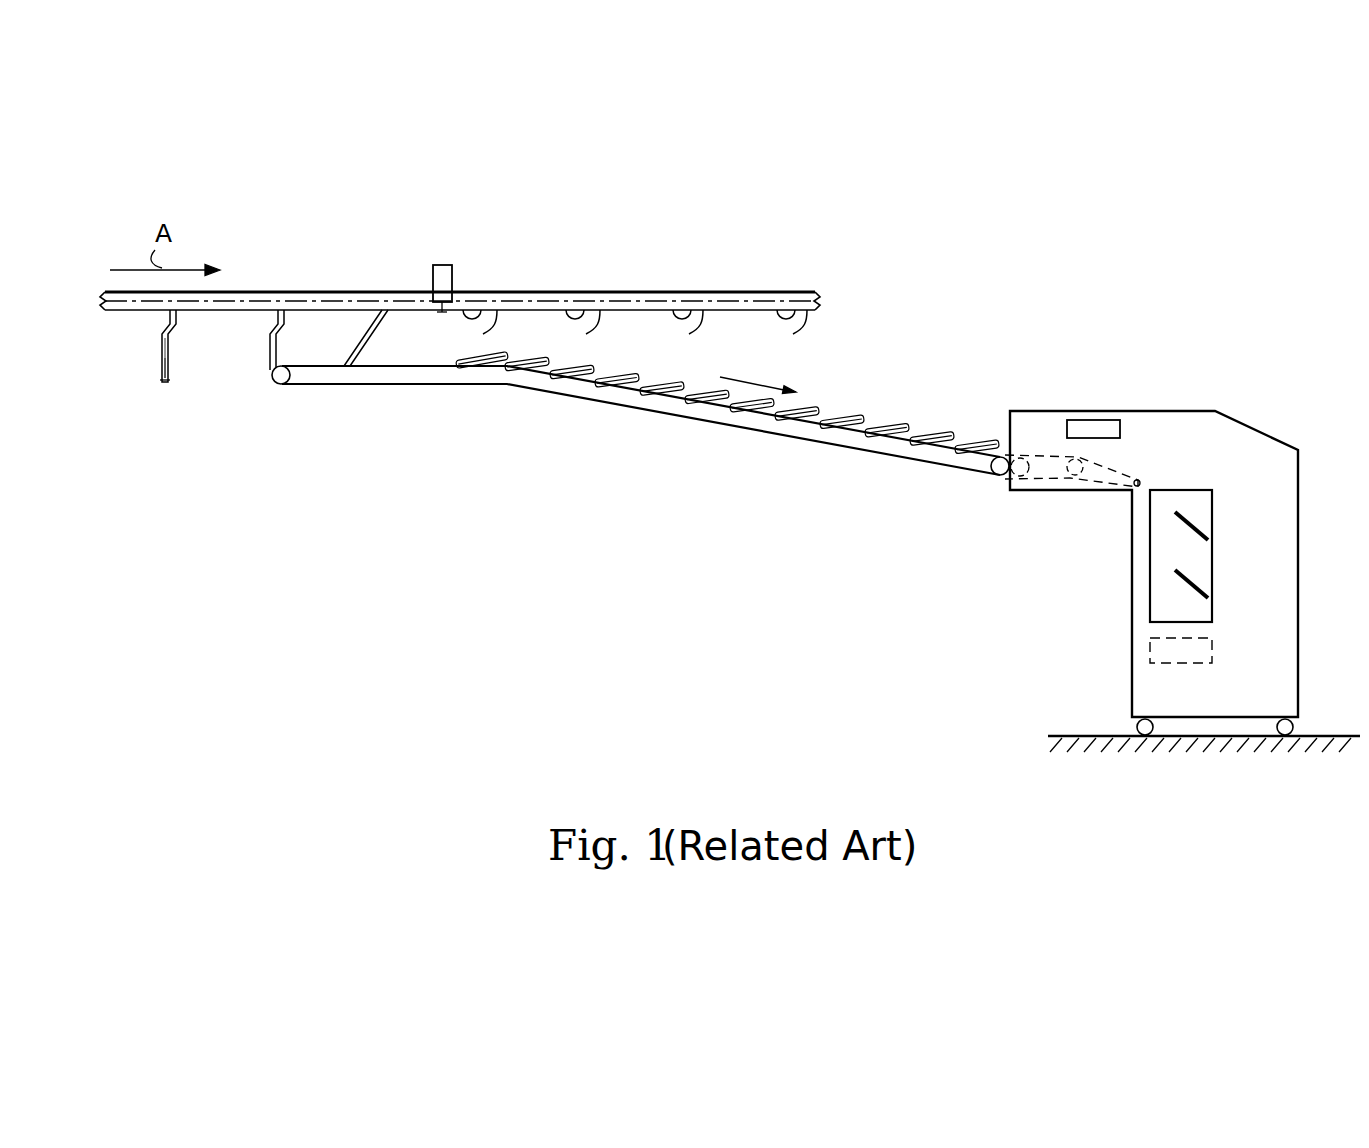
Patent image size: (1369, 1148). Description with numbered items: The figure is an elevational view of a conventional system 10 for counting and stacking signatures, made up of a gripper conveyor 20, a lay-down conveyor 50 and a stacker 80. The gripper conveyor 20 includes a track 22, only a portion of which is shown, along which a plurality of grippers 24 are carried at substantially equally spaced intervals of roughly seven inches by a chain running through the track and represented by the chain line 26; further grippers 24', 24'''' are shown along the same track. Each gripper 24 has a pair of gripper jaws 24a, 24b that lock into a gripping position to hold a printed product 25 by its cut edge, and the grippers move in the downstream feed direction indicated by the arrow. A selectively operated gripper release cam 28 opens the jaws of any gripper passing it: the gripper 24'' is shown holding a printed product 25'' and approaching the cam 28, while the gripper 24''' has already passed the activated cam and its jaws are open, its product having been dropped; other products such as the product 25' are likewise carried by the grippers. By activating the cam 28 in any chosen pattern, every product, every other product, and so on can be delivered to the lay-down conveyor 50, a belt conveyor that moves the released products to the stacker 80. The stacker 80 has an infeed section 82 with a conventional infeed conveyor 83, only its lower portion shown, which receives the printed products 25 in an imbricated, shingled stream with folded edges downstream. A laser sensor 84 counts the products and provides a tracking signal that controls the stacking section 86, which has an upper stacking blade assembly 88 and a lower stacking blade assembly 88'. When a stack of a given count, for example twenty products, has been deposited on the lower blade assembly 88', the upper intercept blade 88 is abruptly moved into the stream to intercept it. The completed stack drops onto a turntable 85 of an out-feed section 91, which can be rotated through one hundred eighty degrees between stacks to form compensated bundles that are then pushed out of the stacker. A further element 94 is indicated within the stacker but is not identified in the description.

The system 10 is at (533, 134).
The gripper conveyor 20 is at (460, 243).
The track 22 is at (660, 292).
The gripper 24 is at (164, 349).
The gripper jaw 24a is at (164, 333).
The gripper jaw 24b is at (178, 320).
The hanger 24' is at (313, 340).
The gripper 24'' is at (446, 332).
The gripper 24''' is at (558, 335).
The hanger hook 24'''' is at (706, 339).
The printed product 25 is at (557, 401).
The article roller 25' is at (247, 406).
The printed product 25'' is at (340, 378).
The chain line 26 is at (298, 292).
The gripper release cam 28 is at (465, 252).
The lay-down conveyor 50 is at (722, 447).
The stacker 80 is at (1179, 550).
The infeed section 82 is at (1036, 425).
The infeed conveyor 83 is at (1047, 495).
The laser sensor 84 is at (1082, 420).
The turntable 85 is at (1148, 650).
The stacking section 86 is at (1175, 460).
The upper stacking blade assembly 88 is at (1220, 515).
The lower stacking blade assembly 88' is at (1224, 571).
The out-feed section 91 is at (1281, 670).
The collection bin 94 is at (1159, 602).